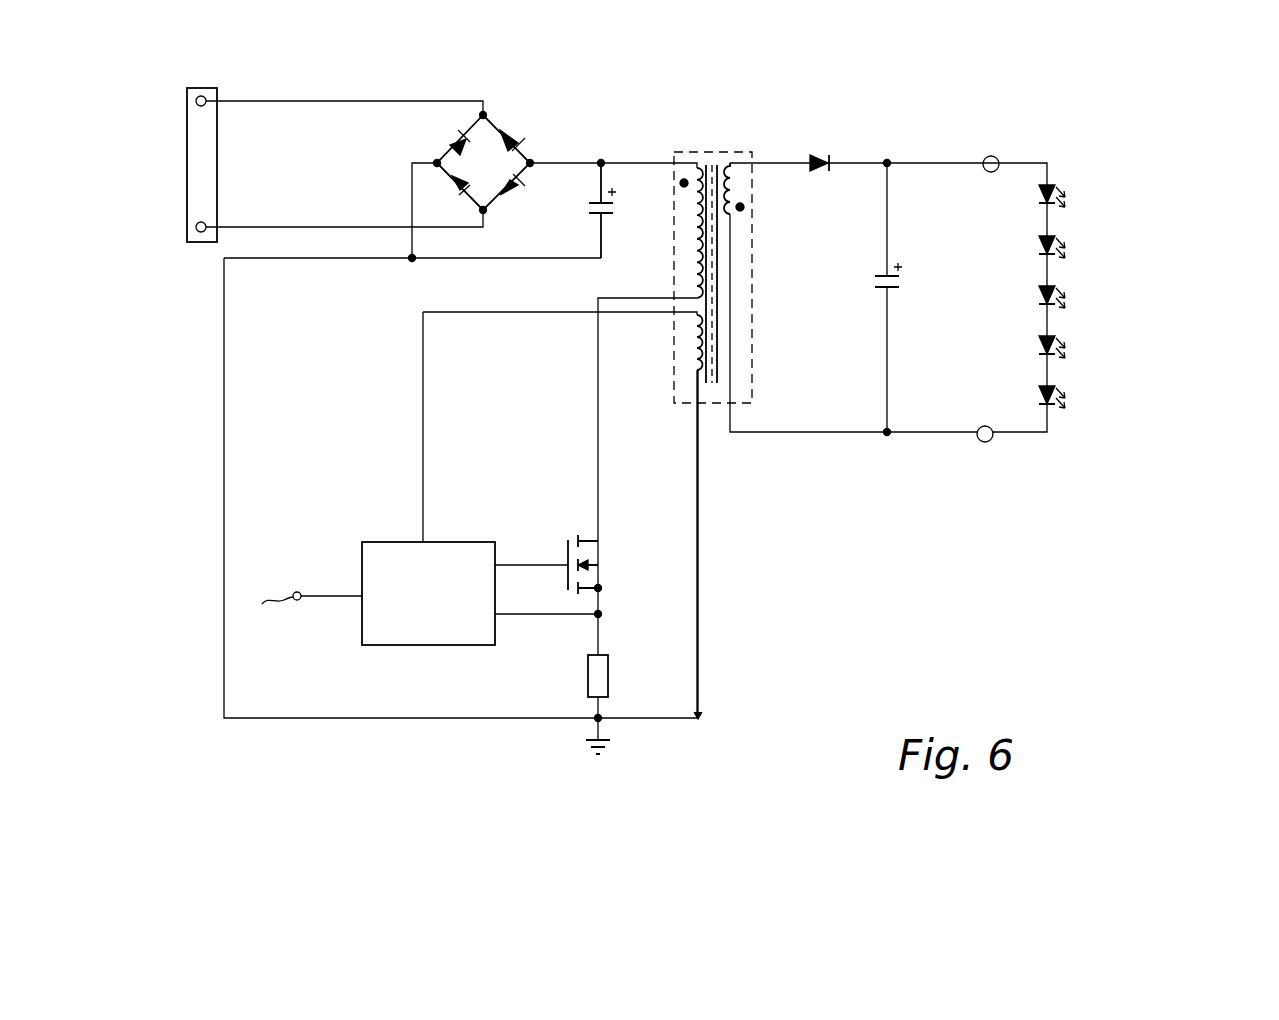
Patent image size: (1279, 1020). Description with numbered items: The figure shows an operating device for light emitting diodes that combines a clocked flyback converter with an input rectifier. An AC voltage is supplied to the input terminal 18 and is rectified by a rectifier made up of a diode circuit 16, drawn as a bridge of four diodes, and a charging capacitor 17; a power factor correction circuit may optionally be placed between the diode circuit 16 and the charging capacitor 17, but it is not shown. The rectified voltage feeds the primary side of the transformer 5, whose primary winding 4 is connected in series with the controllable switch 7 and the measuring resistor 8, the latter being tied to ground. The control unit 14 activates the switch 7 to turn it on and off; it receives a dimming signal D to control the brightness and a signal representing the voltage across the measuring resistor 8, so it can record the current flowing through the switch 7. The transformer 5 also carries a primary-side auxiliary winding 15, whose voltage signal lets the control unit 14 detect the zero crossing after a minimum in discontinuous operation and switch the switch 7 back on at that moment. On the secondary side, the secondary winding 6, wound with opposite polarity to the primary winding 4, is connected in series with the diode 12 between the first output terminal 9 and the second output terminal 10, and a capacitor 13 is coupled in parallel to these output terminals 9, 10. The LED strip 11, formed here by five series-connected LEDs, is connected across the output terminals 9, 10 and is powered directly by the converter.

The input terminal 18 is at (185, 151).
The diode circuit 16 is at (490, 127).
The charging capacitor 17 is at (594, 214).
The transformer 5 is at (702, 148).
The primary winding 4 is at (696, 241).
The secondary winding 6 is at (742, 190).
The auxiliary winding 15 is at (696, 353).
The diode 12 is at (826, 152).
The capacitor 13 is at (906, 282).
The first output terminal 9 is at (990, 156).
The second output terminal 10 is at (988, 443).
The LED strip 11 is at (1103, 290).
The control unit 14 is at (378, 542).
The controllable switch 7 is at (568, 546).
The measuring resistor 8 is at (611, 678).